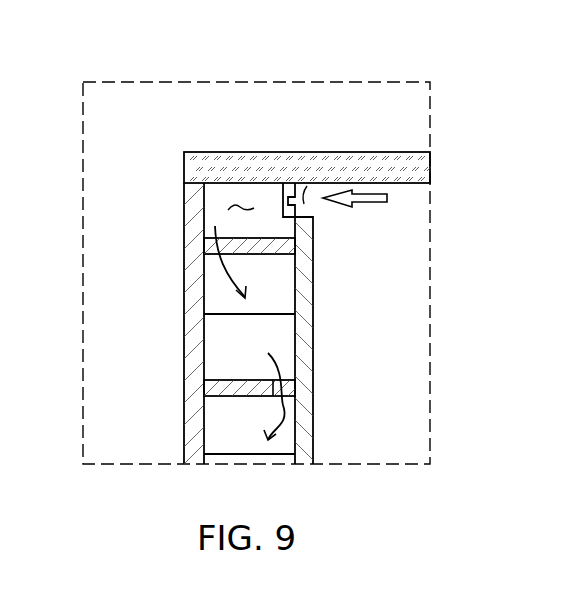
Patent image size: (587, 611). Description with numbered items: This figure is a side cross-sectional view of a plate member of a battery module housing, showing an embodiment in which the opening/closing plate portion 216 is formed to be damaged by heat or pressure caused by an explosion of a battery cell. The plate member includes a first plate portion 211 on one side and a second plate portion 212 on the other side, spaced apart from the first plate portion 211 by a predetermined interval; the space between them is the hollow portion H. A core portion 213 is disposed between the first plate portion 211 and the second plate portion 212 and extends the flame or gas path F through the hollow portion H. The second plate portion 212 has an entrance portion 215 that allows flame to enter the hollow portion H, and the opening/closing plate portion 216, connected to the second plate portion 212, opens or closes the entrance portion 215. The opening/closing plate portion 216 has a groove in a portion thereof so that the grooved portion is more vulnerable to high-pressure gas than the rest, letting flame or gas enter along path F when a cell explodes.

The first plate portion 211 is at (190, 258).
The second plate portion 212 is at (303, 344).
The core portion 213 is at (240, 375).
The entrance portion 215 is at (314, 193).
The opening/closing plate portion 216 is at (287, 186).
The flame or gas path F is at (238, 273).
The hollow portion H is at (237, 196).